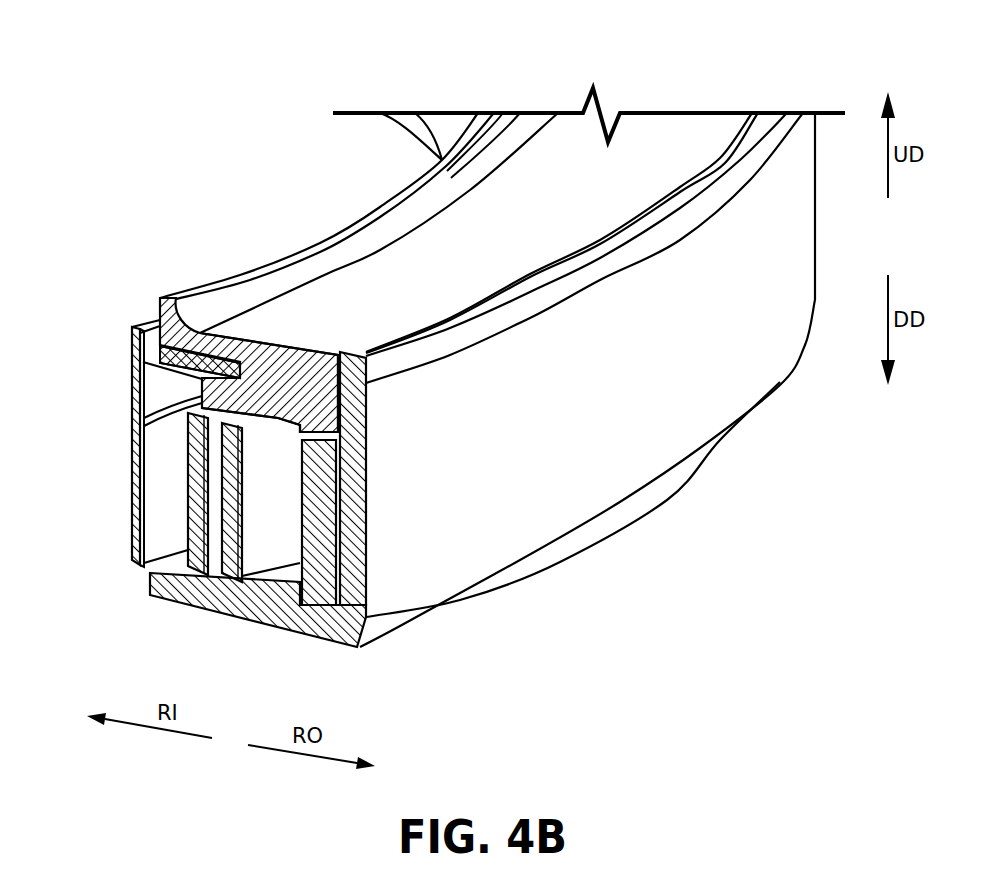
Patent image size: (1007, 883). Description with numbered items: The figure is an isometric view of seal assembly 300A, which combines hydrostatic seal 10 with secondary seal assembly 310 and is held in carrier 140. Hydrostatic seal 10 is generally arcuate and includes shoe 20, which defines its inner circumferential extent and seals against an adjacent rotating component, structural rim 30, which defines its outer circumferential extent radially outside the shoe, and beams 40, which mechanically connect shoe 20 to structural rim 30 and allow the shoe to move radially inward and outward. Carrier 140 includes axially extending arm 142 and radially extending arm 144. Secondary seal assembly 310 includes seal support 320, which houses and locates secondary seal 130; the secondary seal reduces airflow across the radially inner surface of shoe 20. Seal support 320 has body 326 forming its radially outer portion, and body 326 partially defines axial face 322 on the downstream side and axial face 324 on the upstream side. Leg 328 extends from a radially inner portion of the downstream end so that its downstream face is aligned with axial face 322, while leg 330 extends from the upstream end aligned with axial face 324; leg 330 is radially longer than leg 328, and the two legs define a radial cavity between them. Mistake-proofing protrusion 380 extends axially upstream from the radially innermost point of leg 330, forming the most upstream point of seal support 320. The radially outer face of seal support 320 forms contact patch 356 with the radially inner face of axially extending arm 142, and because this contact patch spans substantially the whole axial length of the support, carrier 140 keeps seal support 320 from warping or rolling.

The seal assembly 300A is at (347, 62).
The axial face 324 is at (647, 128).
The axially extending arm 142 is at (795, 256).
The secondary seal assembly 310 is at (208, 238).
The mistake-proofing protrusion 380 is at (243, 297).
The secondary seal 130 is at (157, 352).
The shoe 20 is at (133, 412).
The hydrostatic seal 10 is at (83, 520).
The leg 328 is at (137, 421).
The leg 330 is at (245, 333).
The body 326 is at (310, 355).
The seal support 320 is at (306, 392).
The axial face 322 is at (267, 432).
The contact patch 356 is at (360, 411).
The carrier 140 is at (572, 452).
The beams 40 is at (232, 574).
The structural rim 30 is at (307, 581).
The radially extending arm 144 is at (310, 644).